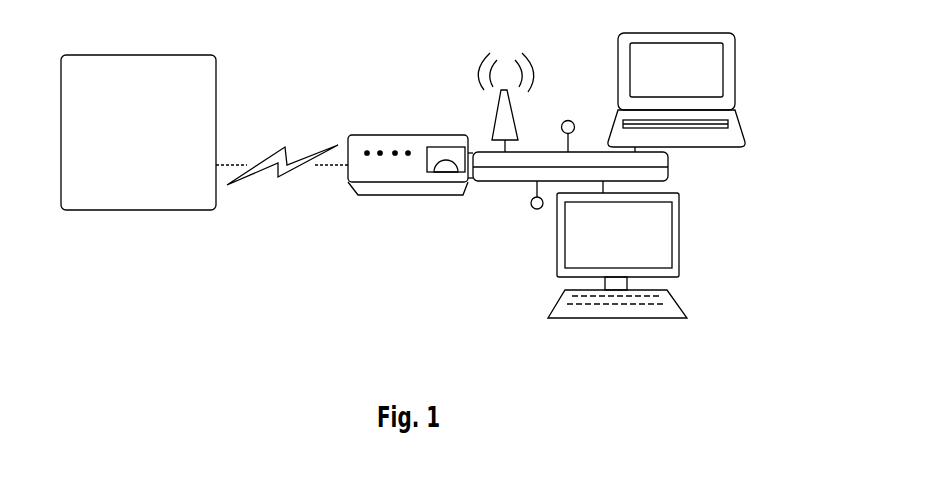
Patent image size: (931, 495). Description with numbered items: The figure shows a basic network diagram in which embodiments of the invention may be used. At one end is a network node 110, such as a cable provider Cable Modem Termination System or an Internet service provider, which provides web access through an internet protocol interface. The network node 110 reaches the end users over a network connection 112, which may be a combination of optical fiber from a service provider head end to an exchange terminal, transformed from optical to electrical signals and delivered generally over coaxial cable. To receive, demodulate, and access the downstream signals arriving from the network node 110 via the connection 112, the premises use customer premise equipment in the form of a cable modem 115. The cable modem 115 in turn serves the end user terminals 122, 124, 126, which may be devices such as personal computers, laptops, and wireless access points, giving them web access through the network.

The network node 110 is at (138, 132).
The network connection 112 is at (317, 174).
The cable modem 115 is at (410, 153).
The end user terminal 122 is at (617, 249).
The end user terminal 124 is at (676, 92).
The end user terminal 126 is at (528, 122).